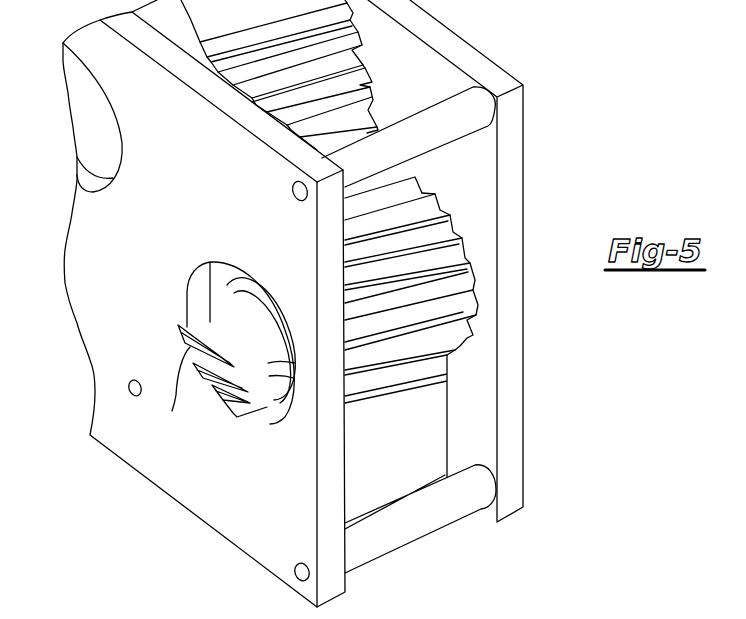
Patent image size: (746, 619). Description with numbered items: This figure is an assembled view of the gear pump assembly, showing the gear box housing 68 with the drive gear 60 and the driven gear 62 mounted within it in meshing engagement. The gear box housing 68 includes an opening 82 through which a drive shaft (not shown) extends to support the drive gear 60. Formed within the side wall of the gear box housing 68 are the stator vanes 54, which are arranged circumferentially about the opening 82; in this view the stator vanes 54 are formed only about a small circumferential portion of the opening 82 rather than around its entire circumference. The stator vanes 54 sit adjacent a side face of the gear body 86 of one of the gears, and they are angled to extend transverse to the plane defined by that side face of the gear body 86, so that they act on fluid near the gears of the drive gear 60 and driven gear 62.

The stator vanes 54 is at (212, 390).
The drive gear 60 is at (428, 204).
The driven gear 62 is at (356, 84).
The gear box housing 68 is at (503, 507).
The opening 82 is at (228, 308).
The gear body 86 is at (267, 360).